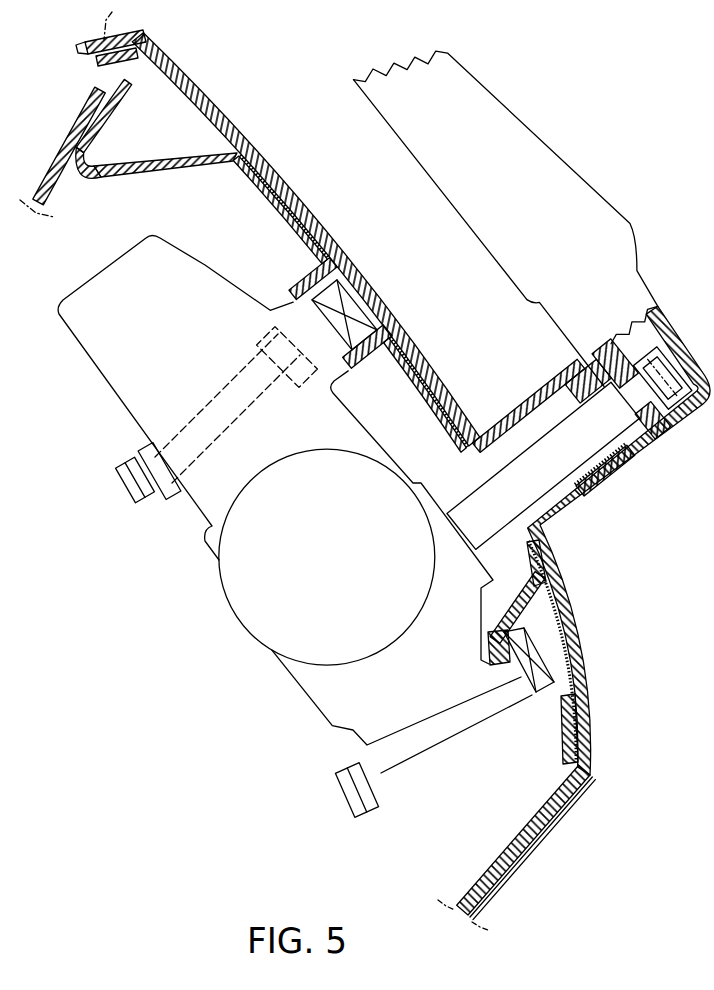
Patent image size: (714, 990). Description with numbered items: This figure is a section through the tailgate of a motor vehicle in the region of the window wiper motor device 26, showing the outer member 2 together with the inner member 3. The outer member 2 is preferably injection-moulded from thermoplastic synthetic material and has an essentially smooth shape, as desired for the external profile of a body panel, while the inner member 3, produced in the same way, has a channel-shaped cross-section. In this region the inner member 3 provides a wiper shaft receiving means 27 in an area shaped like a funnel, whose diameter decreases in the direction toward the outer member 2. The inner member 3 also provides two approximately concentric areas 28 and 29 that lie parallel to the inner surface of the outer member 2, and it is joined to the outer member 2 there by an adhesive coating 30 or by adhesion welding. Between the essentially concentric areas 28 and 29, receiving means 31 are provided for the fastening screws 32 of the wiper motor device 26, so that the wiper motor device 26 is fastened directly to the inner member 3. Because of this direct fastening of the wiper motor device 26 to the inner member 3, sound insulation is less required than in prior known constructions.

The outer member 2 is at (580, 681).
The inner member 3 is at (494, 852).
The window wiper motor device 26 is at (298, 689).
The wiper shaft receiving means 27 is at (607, 487).
The concentric area 28 is at (421, 359).
The concentric area 29 is at (249, 161).
The adhesive coating 30 is at (294, 212).
The receiving means 31 is at (339, 268).
The fastening screws 32 is at (351, 321).